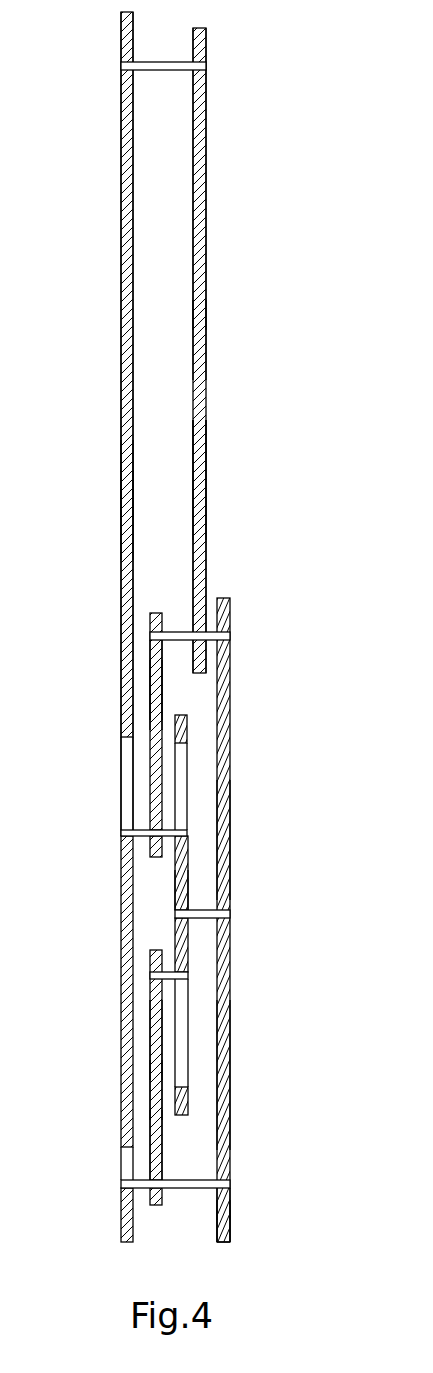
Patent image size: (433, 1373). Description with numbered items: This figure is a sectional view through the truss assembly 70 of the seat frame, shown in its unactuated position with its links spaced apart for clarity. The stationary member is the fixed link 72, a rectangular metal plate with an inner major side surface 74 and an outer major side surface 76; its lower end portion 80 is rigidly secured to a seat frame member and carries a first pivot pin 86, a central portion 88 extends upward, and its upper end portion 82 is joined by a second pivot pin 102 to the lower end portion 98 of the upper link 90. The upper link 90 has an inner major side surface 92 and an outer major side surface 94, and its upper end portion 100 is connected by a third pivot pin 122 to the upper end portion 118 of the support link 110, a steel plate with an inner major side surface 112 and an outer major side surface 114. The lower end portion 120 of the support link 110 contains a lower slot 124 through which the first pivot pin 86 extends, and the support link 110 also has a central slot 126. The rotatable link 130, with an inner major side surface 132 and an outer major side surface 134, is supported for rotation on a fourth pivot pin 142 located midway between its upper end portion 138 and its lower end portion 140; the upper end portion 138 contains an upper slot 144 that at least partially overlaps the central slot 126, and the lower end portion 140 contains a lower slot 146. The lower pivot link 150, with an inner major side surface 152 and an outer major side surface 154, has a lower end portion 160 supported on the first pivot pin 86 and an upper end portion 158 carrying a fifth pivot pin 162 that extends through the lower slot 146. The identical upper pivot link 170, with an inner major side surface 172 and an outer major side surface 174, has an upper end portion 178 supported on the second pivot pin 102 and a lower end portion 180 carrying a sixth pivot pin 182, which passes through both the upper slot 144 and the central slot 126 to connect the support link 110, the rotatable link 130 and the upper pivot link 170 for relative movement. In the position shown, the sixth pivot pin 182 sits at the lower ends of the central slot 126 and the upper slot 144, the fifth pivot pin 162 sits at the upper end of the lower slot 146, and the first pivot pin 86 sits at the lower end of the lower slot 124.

The truss assembly 70 is at (232, 477).
The fixed link 72 is at (230, 1068).
The inner major side surface 74 is at (217, 1222).
The outer major side surface 76 is at (230, 1222).
The lower end portion 80 is at (231, 1196).
The upper end portion 82 is at (230, 618).
The first pivot pin 86 is at (190, 1178).
The central portion 88 is at (230, 830).
The upper link 90 is at (206, 400).
The inner major side surface 92 is at (193, 366).
The outer major side surface 94 is at (206, 273).
The lower end portion 98 is at (207, 573).
The upper end portion 100 is at (209, 150).
The second pivot pin 102 is at (168, 641).
The support link 110 is at (120, 343).
The inner major side surface 112 is at (121, 458).
The outer major side surface 114 is at (130, 545).
The upper end portion 118 is at (121, 163).
The lower end portion 120 is at (121, 1217).
The third pivot pin 122 is at (172, 62).
The lower slot 124 is at (121, 1160).
The central slot 126 is at (121, 757).
The rotatable link 130 is at (188, 872).
The inner major side surface 132 is at (177, 900).
The outer major side surface 134 is at (188, 945).
The upper end portion 138 is at (187, 718).
The lower end portion 140 is at (189, 1103).
The fourth pivot pin 142 is at (205, 920).
The upper slot 144 is at (188, 782).
The lower slot 146 is at (190, 1017).
The lower pivot link 150 is at (150, 1038).
The inner major side surface 152 is at (150, 1090).
The outer major side surface 154 is at (163, 1145).
The upper end portion 158 is at (150, 952).
The lower end portion 160 is at (158, 1205).
The fifth pivot pin 162 is at (165, 985).
The upper pivot link 170 is at (150, 698).
The inner major side surface 172 is at (150, 663).
The outer major side surface 174 is at (163, 692).
The upper end portion 178 is at (152, 613).
The lower end portion 180 is at (155, 855).
The sixth pivot pin 182 is at (138, 828).